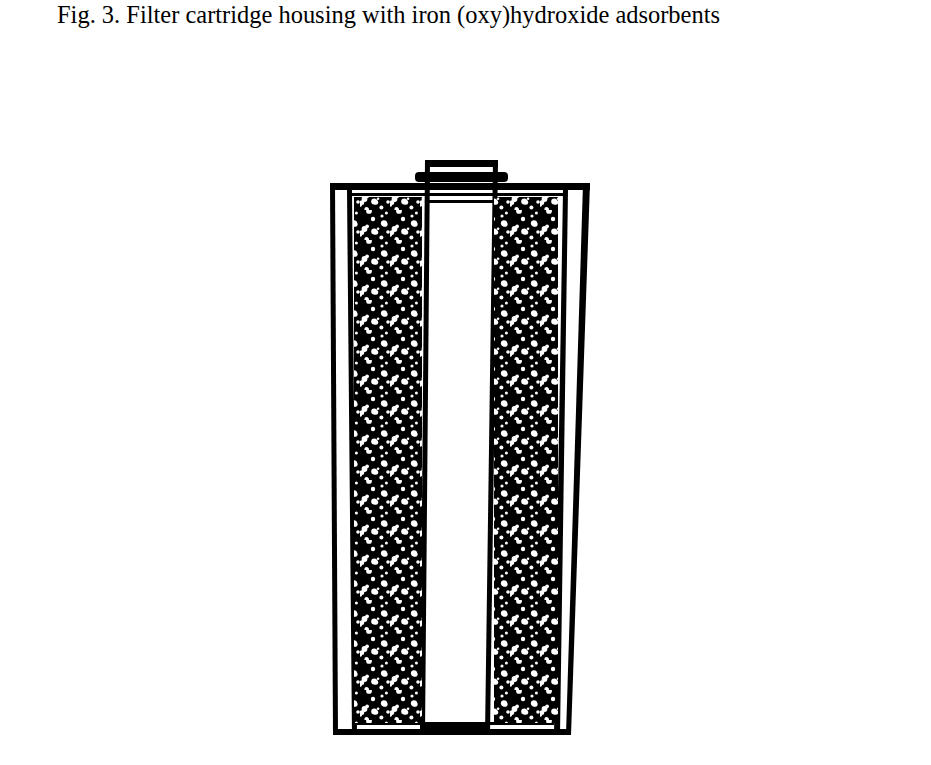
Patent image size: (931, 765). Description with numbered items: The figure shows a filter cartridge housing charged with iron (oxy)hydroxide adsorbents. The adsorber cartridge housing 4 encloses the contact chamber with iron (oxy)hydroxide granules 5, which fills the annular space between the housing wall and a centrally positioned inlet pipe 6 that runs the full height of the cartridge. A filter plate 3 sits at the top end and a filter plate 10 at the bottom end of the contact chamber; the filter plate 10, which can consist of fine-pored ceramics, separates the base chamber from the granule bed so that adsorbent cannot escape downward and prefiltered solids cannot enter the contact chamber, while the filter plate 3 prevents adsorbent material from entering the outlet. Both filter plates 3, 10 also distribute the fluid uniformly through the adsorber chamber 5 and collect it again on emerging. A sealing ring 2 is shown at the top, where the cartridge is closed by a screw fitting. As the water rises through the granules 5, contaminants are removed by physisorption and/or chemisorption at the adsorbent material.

The sealing ring 2 is at (543, 167).
The filter plate 3 is at (560, 217).
The adsorber cartridge housing 4 is at (300, 431).
The contact chamber with iron (oxy)hydroxide granules 5 is at (550, 397).
The inlet pipe 6 is at (480, 533).
The filter plate 10 is at (548, 697).